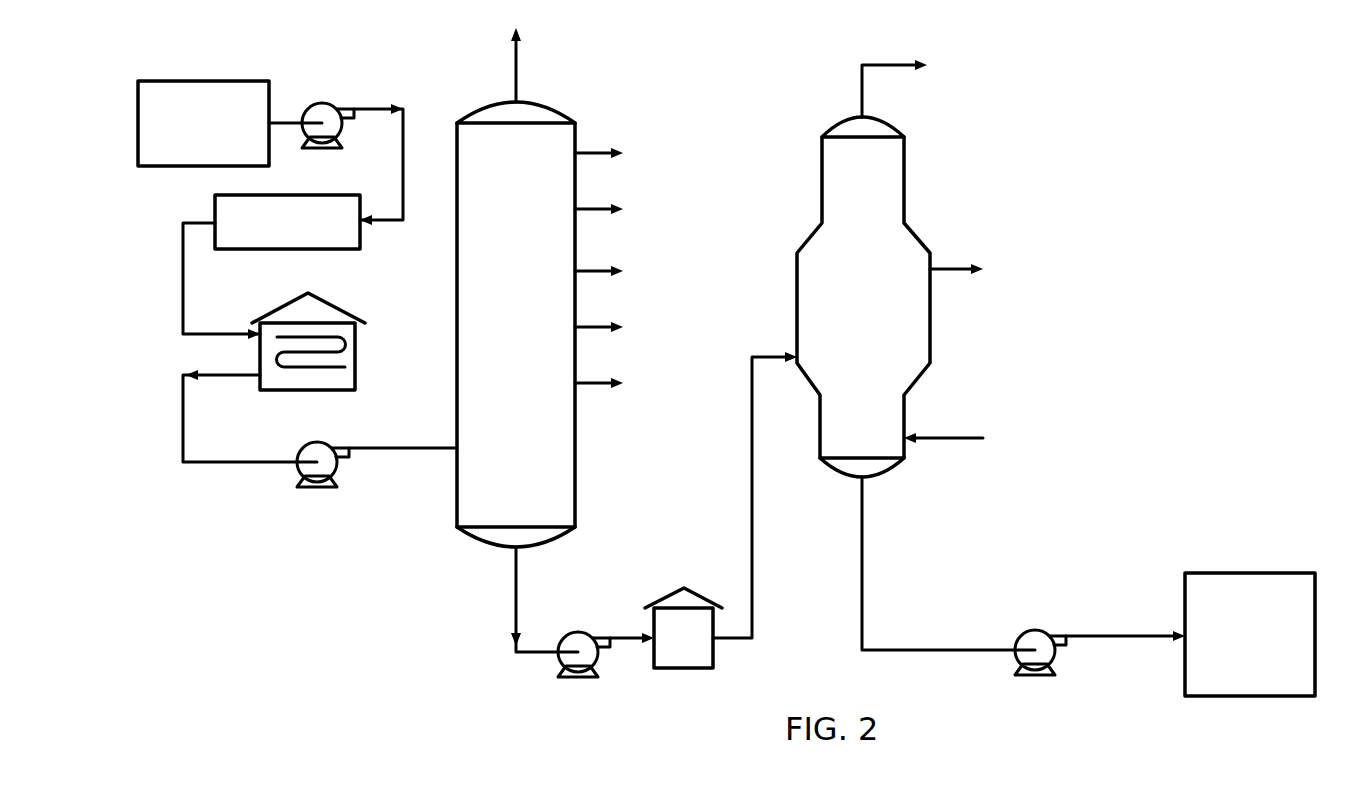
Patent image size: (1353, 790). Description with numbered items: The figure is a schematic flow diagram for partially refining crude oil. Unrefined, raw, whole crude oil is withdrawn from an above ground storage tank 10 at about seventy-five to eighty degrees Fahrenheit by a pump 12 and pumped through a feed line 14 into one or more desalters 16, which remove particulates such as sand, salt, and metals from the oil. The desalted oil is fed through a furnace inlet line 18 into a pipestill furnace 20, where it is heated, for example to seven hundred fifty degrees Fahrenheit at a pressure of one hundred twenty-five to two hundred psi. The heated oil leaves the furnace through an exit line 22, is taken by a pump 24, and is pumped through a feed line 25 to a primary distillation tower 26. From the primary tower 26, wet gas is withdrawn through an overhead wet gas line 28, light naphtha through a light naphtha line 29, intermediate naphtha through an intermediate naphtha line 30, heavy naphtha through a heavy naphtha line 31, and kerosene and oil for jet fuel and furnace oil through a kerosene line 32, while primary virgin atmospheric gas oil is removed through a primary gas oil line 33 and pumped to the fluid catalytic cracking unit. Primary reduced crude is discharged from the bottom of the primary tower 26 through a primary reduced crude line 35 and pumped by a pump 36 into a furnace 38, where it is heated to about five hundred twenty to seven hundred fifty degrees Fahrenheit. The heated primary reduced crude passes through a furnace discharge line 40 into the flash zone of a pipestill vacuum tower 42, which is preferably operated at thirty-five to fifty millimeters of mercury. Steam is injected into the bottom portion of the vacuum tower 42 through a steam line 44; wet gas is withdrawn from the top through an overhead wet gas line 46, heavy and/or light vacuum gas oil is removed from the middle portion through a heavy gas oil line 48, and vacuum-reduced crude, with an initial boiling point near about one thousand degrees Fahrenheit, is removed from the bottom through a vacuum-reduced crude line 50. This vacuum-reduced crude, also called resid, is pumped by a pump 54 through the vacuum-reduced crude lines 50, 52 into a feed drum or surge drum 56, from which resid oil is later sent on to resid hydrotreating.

The above ground storage tank 10 is at (191, 154).
The pump 12 is at (322, 103).
The feed line 14 is at (403, 178).
The desalter 16 is at (301, 233).
The furnace inlet line 18 is at (180, 267).
The pipestill furnace 20 is at (340, 306).
The exit line 22 is at (183, 408).
The pump 24 is at (337, 472).
The feed line 25 is at (398, 445).
The primary distillation tower 26 is at (455, 349).
The overhead wet gas line 28 is at (518, 73).
The light naphtha line 29 is at (596, 146).
The intermediate naphtha line 30 is at (590, 203).
The heavy naphtha line 31 is at (590, 266).
The kerosene line 32 is at (588, 322).
The primary gas oil line 33 is at (588, 378).
The primary reduced crude line 35 is at (512, 593).
The pump 36 is at (580, 632).
The furnace 38 is at (688, 670).
The furnace discharge line 40 is at (752, 480).
The pipestill vacuum tower 42 is at (797, 305).
The steam line 44 is at (957, 440).
The overhead wet gas line 46 is at (865, 95).
The heavy gas oil line 48 is at (945, 264).
The vacuum-reduced crude line 50 is at (865, 613).
The vacuum-reduced crude line 52 is at (1128, 633).
The pump 54 is at (1030, 630).
The surge drum 56 is at (1238, 644).